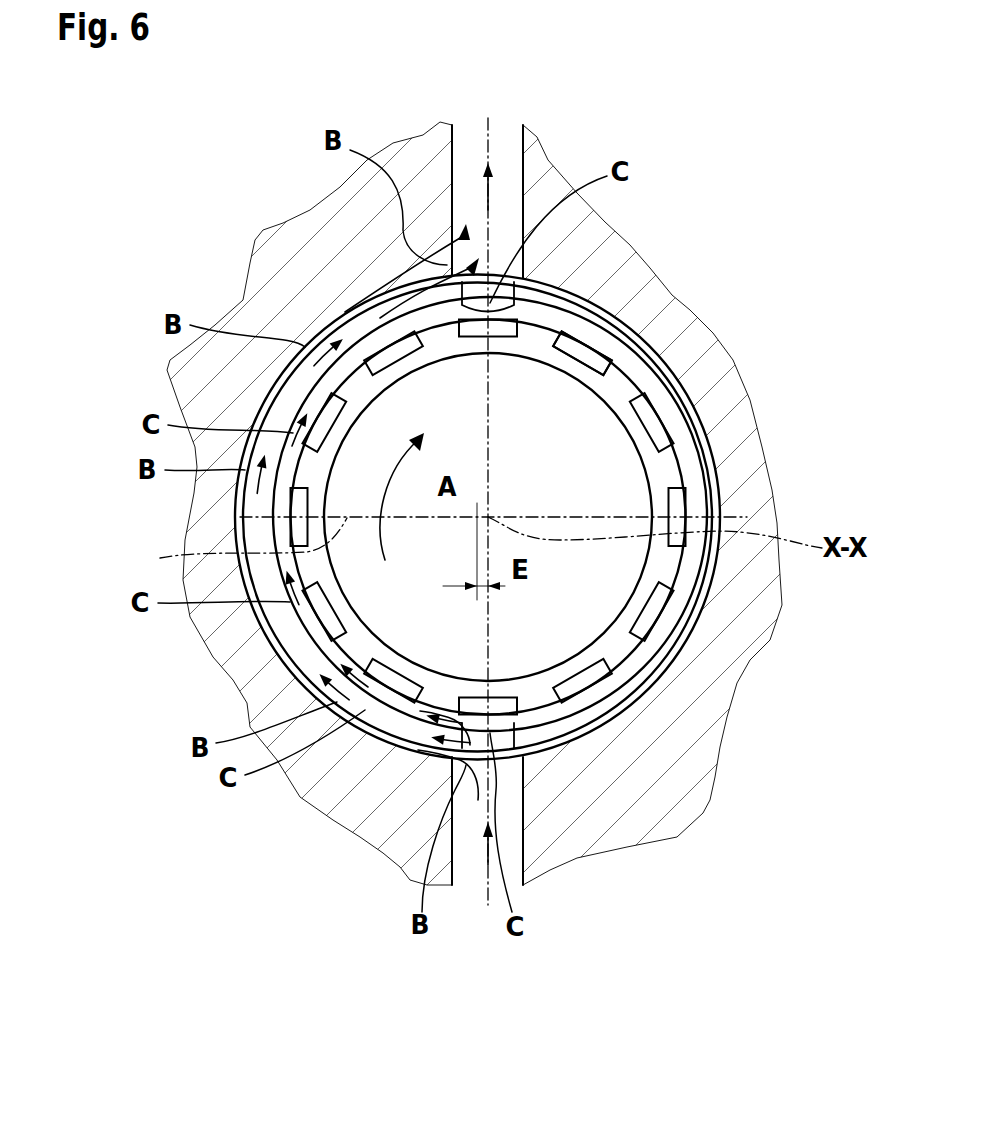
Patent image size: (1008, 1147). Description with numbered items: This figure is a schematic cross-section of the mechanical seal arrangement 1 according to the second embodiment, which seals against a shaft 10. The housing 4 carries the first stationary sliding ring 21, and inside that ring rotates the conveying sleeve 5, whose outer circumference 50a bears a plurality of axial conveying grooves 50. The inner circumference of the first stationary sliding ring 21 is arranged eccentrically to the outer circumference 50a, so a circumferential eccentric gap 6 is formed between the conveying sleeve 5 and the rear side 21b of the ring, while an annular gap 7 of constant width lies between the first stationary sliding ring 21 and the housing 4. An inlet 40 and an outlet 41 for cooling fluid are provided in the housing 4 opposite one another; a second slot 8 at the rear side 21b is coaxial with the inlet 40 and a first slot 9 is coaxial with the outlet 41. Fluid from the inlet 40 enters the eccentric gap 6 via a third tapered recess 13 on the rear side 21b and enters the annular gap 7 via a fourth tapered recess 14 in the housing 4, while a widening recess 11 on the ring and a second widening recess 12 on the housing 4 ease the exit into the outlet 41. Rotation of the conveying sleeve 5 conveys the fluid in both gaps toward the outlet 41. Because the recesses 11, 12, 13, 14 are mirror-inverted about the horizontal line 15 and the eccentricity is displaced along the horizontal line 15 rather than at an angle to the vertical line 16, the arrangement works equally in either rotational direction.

The mechanical seal arrangement 1 is at (178, 152).
The housing 4 is at (628, 277).
The conveying sleeve 5 is at (630, 398).
The eccentric gap 6 is at (327, 672).
The annular gap 7 is at (655, 690).
The second slot 8 is at (500, 752).
The first slot 9 is at (537, 307).
The shaft 10 is at (600, 483).
The widening recess 11 is at (377, 310).
The second widening recess 12 is at (440, 276).
The third tapered recess 13 is at (440, 722).
The fourth tapered recess 14 is at (455, 745).
The horizontal line 15 is at (312, 540).
The vertical line 16 is at (485, 152).
The first stationary sliding ring 21 is at (693, 574).
The rear side 21b is at (637, 682).
The inlet 40 is at (470, 886).
The outlet 41 is at (505, 147).
The conveying grooves 50 is at (332, 408).
The outer circumference 50a is at (627, 368).